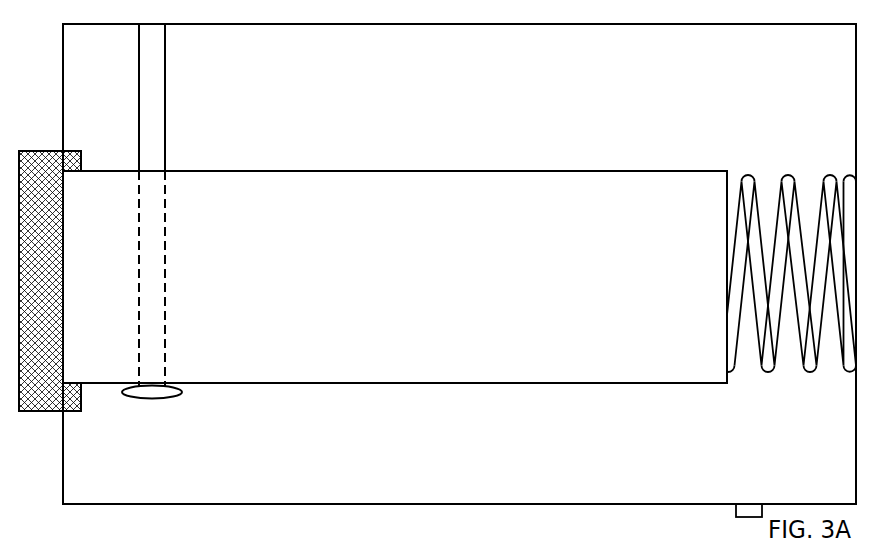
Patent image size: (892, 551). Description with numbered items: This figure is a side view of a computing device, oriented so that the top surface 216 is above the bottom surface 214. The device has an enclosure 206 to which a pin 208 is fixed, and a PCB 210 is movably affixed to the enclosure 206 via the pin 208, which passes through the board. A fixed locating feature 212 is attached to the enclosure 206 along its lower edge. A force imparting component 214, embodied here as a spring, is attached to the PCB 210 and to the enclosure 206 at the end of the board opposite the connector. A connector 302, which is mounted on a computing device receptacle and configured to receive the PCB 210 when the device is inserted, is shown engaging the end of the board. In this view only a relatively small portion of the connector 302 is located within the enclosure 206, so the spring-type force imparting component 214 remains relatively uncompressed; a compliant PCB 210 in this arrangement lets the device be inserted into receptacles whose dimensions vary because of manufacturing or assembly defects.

The enclosure 206 is at (514, 50).
The top surface 216 is at (192, 20).
The pin 208 is at (197, 398).
The PCB 210 is at (430, 286).
The force imparting component 214 is at (192, 500).
The connector 302 is at (50, 423).
The locating feature 212 is at (745, 498).